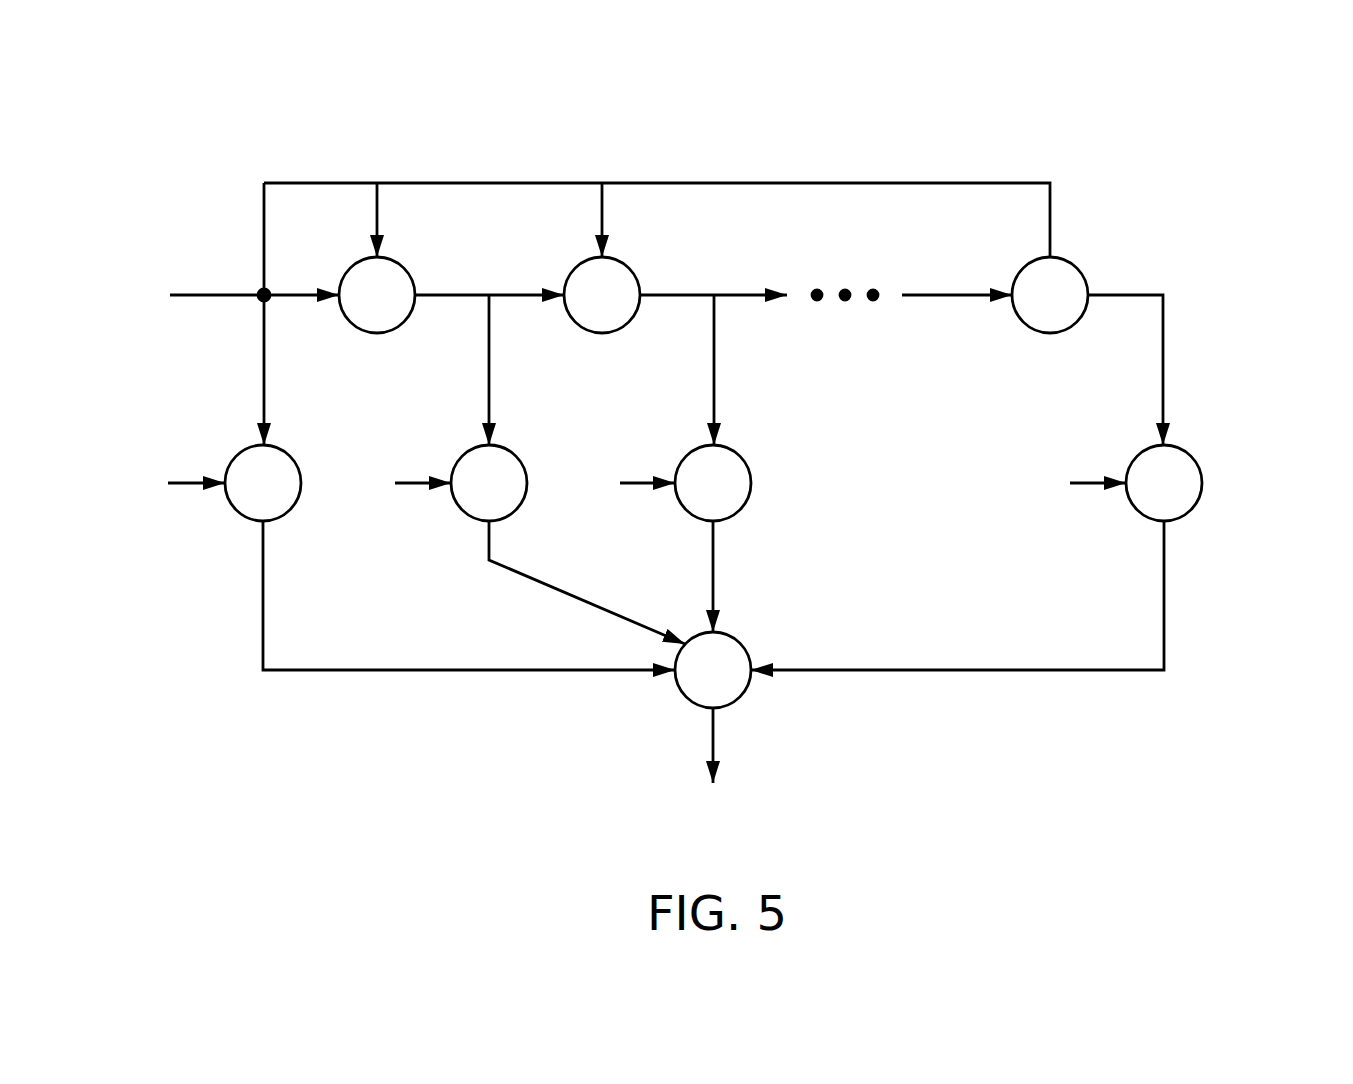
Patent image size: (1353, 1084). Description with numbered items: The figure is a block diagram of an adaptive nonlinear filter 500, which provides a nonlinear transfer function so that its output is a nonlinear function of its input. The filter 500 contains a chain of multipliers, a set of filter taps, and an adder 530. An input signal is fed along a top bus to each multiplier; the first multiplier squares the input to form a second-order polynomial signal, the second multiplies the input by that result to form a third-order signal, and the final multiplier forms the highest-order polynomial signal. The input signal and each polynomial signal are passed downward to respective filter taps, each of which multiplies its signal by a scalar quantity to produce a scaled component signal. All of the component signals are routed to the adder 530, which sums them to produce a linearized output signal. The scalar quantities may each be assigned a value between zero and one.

The adaptive nonlinear filter 500 is at (162, 118).
The adder 530 is at (740, 641).